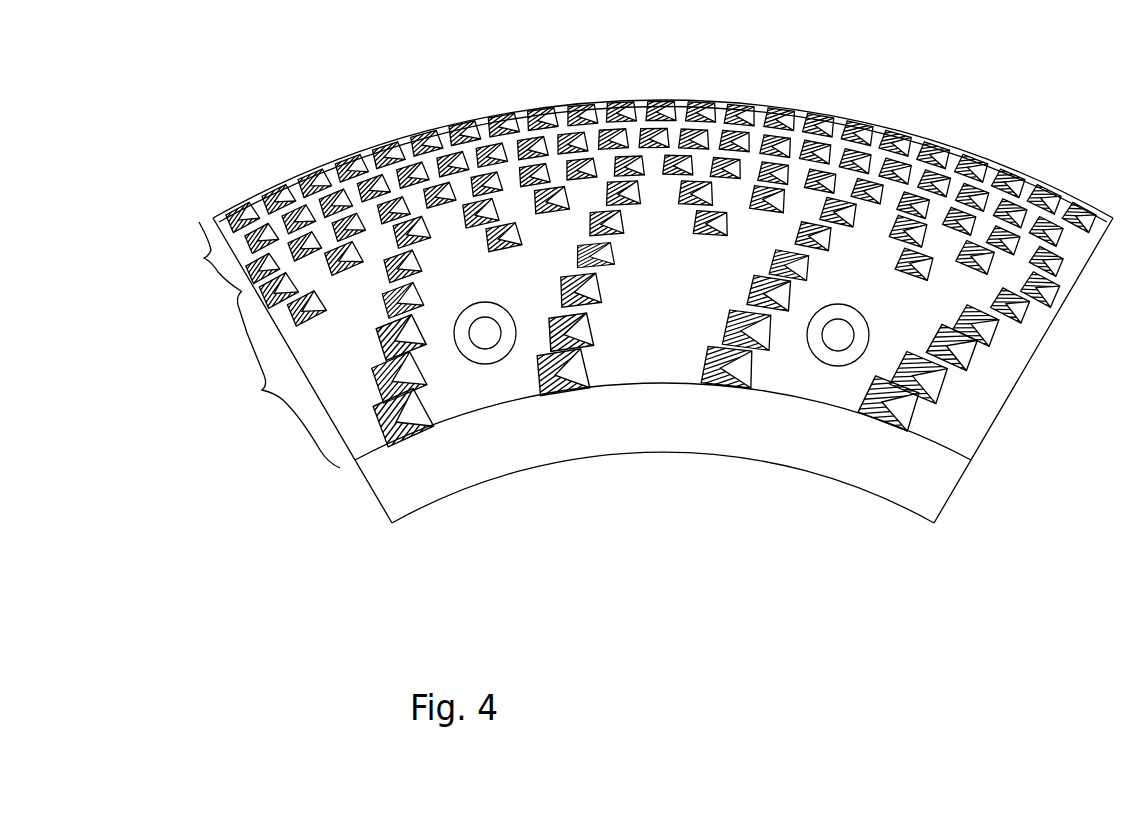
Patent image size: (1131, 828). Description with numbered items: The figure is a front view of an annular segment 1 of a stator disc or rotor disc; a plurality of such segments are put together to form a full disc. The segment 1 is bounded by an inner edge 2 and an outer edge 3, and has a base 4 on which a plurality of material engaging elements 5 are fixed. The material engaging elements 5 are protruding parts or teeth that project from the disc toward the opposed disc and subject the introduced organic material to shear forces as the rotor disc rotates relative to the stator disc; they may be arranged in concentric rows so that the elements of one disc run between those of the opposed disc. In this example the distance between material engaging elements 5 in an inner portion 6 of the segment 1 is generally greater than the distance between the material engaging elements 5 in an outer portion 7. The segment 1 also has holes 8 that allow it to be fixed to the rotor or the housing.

The annular segment 1 is at (663, 280).
The inner edge 2 is at (877, 495).
The outer edge 3 is at (925, 143).
The base 4 is at (920, 480).
The material engaging elements 5 is at (853, 131).
The inner portion 6 is at (289, 379).
The outer portion 7 is at (213, 256).
The holes 8 is at (466, 360).